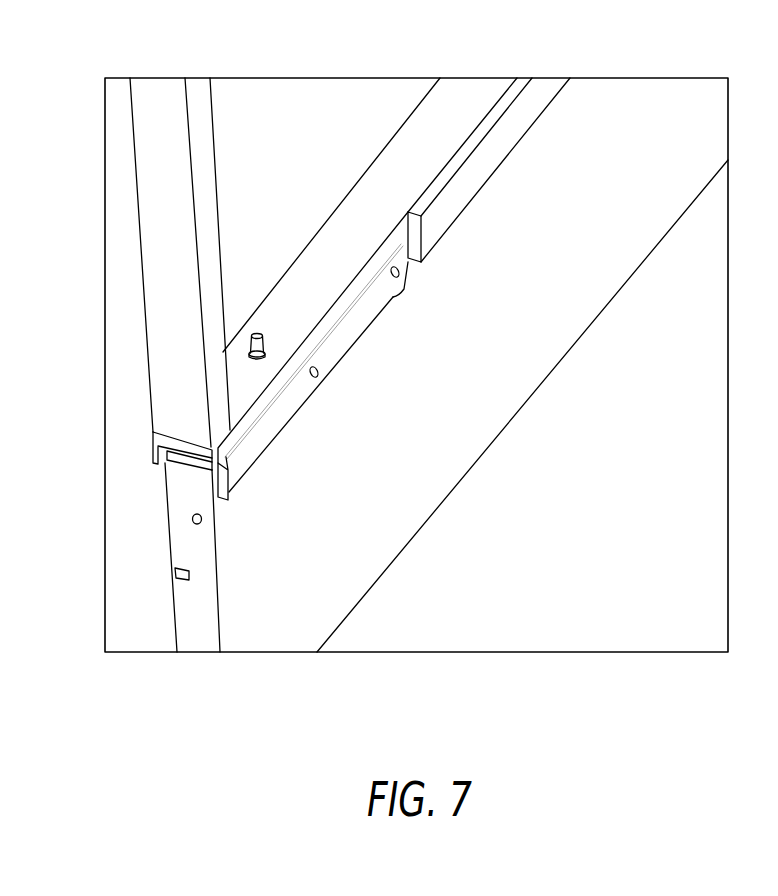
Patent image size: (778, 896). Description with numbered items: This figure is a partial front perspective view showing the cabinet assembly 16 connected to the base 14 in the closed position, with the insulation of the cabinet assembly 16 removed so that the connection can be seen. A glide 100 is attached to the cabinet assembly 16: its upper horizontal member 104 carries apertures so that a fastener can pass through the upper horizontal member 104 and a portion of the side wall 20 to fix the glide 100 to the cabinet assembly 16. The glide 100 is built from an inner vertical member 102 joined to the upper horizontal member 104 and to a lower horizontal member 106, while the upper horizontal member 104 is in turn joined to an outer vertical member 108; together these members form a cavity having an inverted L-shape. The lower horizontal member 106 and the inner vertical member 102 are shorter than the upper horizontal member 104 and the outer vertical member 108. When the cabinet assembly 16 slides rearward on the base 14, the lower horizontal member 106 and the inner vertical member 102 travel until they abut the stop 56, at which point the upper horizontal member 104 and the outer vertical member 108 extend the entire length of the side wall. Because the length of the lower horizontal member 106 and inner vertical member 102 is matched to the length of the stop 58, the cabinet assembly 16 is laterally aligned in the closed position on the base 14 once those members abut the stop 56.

The base 14 is at (328, 603).
The cabinet assembly 16 is at (153, 216).
The side wall 20 is at (266, 122).
The stop 56 is at (287, 406).
The stop 58 is at (228, 492).
The glide 100 is at (500, 132).
The inner vertical member 102 is at (452, 197).
The upper horizontal member 104 is at (358, 268).
The lower horizontal member 106 is at (396, 239).
The outer vertical member 108 is at (155, 445).